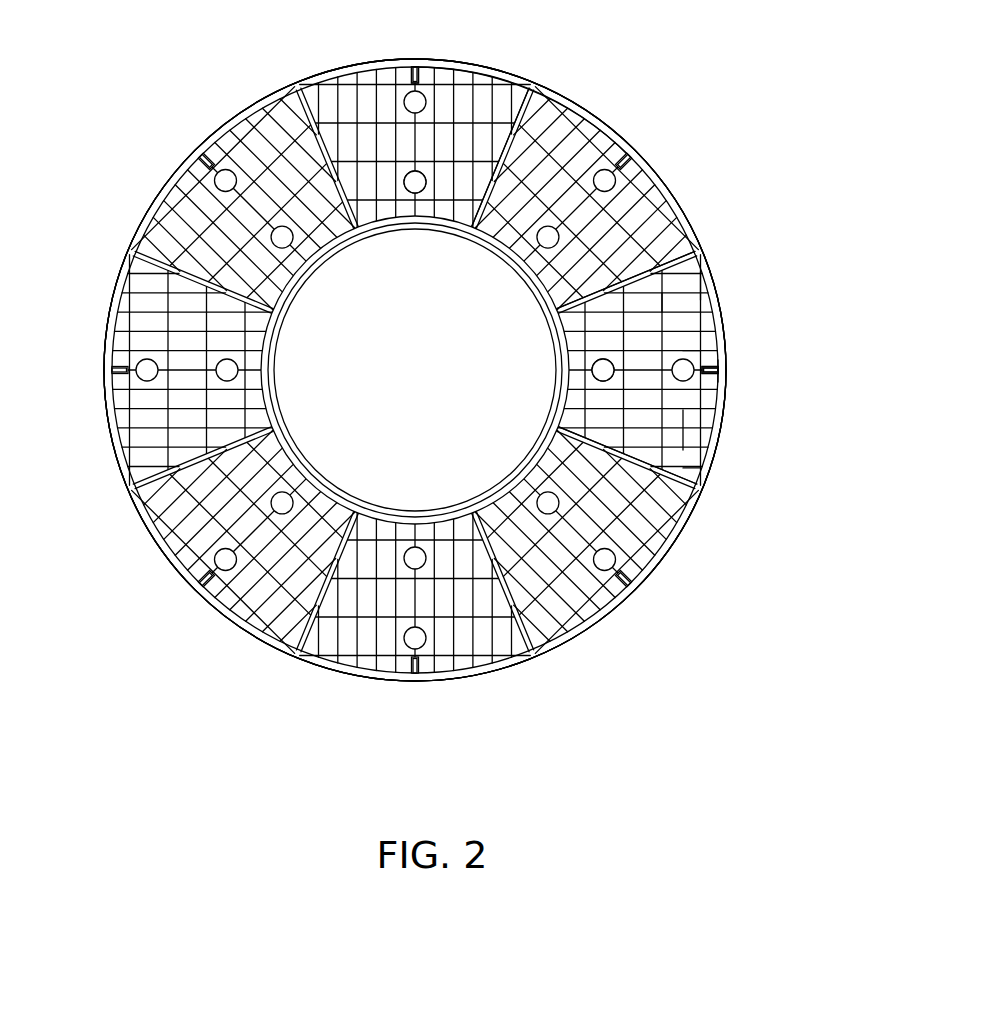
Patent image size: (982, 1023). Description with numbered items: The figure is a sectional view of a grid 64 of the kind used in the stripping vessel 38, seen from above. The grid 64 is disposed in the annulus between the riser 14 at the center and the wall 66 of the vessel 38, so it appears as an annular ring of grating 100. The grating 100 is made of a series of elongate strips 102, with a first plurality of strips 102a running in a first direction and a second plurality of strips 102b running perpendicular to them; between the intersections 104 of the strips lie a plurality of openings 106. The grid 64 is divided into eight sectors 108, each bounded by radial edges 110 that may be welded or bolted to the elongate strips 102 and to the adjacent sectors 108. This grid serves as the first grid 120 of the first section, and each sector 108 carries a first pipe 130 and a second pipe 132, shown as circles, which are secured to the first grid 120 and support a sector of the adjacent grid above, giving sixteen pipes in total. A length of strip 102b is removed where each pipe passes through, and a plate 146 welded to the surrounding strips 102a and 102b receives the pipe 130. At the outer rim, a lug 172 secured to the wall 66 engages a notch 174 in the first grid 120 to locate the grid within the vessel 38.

The riser 14 is at (284, 396).
The stripping vessel 38 is at (696, 560).
The grid 64 is at (486, 690).
The wall 66 is at (660, 172).
The grating 100 is at (683, 428).
The elongate strips 102 is at (680, 332).
The first plurality of strips 102a is at (708, 250).
The second plurality of strips 102b is at (690, 287).
The intersections 104 is at (692, 470).
The openings 106 is at (672, 305).
The sectors 108 is at (452, 68).
The radial edges 110 is at (540, 88).
The first grid 120 is at (160, 583).
The first pipe 130 is at (415, 186).
The second pipe 132 is at (717, 363).
The plate 146 is at (690, 357).
The lug 172 is at (719, 372).
The notch 174 is at (716, 377).